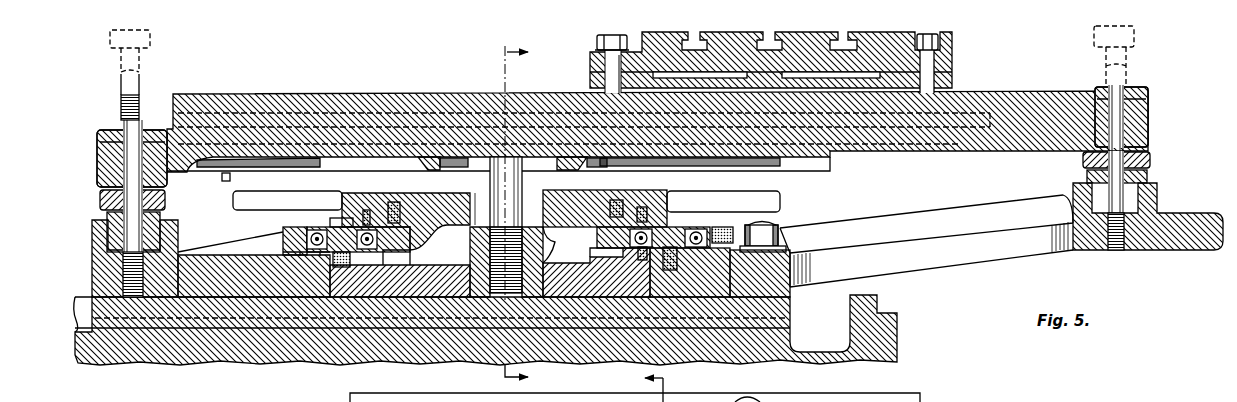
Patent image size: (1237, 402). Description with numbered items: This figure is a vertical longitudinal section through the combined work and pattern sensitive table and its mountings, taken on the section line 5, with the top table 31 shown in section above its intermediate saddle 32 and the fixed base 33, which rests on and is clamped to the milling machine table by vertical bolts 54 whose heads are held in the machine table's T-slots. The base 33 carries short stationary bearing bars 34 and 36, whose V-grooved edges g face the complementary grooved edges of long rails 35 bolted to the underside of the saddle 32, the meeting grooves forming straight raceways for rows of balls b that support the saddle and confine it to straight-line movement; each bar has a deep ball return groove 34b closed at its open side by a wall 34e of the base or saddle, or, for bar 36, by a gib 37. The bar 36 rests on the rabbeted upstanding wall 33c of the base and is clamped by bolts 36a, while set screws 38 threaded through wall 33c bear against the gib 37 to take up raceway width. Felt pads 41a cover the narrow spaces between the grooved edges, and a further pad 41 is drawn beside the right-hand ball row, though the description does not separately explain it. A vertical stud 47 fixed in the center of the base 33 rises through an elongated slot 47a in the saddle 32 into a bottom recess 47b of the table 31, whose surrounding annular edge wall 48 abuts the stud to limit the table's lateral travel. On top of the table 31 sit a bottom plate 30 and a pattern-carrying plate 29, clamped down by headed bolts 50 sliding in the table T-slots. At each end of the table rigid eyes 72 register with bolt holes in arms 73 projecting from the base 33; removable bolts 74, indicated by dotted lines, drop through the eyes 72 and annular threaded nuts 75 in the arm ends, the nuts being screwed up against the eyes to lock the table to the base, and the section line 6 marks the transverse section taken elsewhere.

The work table 31 is at (366, 98).
The arms 73 is at (98, 281).
The plate 29 is at (953, 57).
The bottom plate 30 is at (953, 80).
The headed bolts 50 is at (603, 62).
The eyes 72 is at (98, 158).
The annular threaded nuts 75 is at (100, 198).
The removable bolts 74 is at (140, 61).
The ball groove 34b is at (324, 228).
The annular edge wall 48 is at (440, 157).
The bottom recess 47b is at (462, 157).
The stud 47 is at (523, 181).
The elongated slot 47a is at (537, 263).
The saddle 32 is at (431, 196).
The wall 34e is at (288, 229).
The felt pads 41a is at (366, 232).
The bolts 36a is at (688, 228).
The ball bearing 41 is at (641, 232).
The gib 37 is at (703, 226).
The vertical bolts 54 is at (778, 227).
The set screws 38 is at (781, 226).
The upstanding wall 33c is at (708, 244).
The bar 36 is at (673, 335).
The base 33 is at (440, 290).
The bar 34 is at (337, 290).
The balls b is at (287, 243).
The V grooves g is at (348, 268).
The rail 35 is at (410, 250).
The section line 6- 6 is at (524, 216).
The section line 5 is at (647, 386).